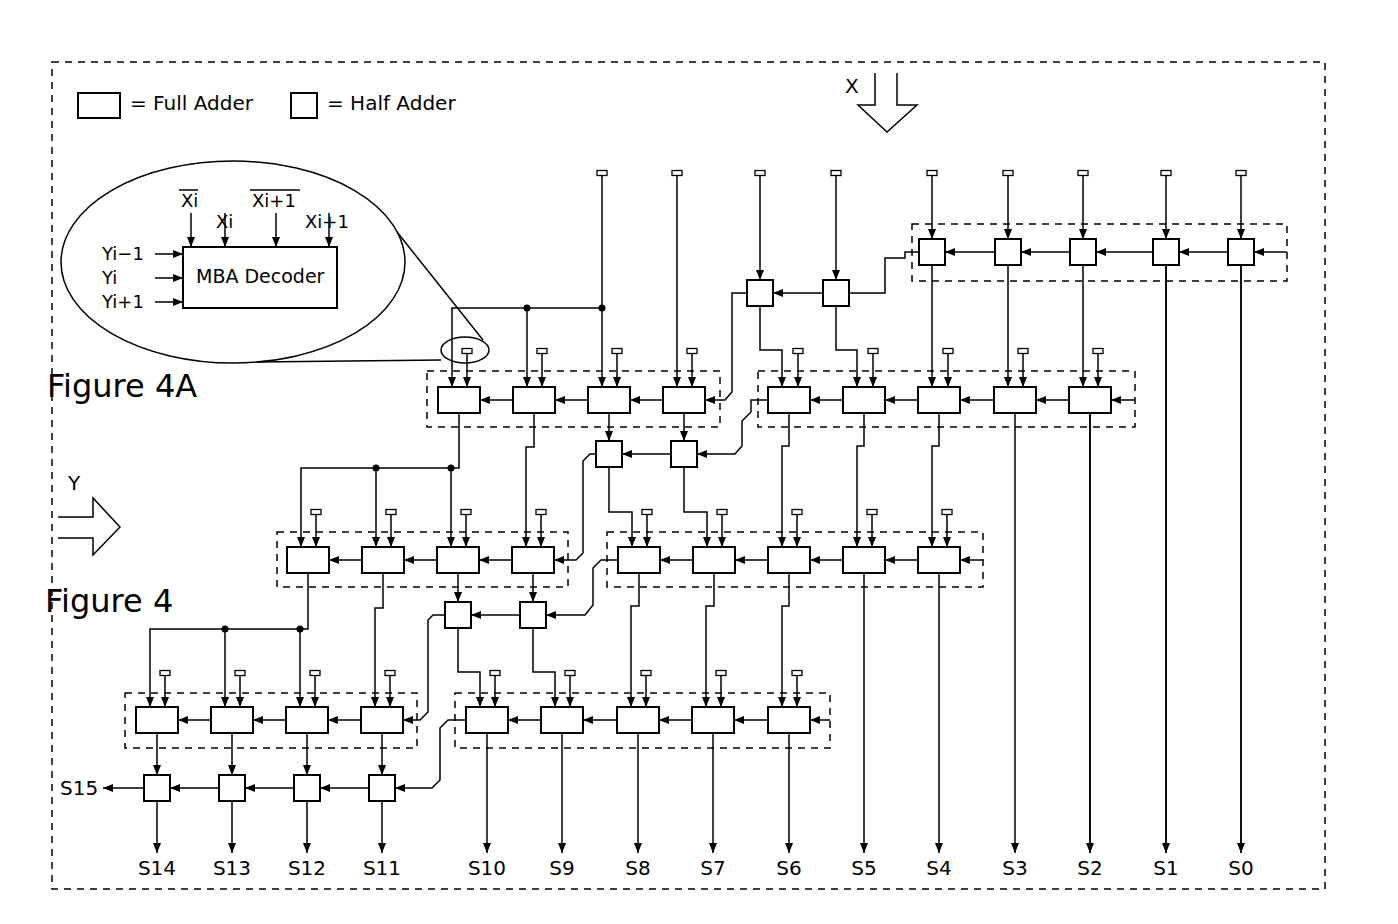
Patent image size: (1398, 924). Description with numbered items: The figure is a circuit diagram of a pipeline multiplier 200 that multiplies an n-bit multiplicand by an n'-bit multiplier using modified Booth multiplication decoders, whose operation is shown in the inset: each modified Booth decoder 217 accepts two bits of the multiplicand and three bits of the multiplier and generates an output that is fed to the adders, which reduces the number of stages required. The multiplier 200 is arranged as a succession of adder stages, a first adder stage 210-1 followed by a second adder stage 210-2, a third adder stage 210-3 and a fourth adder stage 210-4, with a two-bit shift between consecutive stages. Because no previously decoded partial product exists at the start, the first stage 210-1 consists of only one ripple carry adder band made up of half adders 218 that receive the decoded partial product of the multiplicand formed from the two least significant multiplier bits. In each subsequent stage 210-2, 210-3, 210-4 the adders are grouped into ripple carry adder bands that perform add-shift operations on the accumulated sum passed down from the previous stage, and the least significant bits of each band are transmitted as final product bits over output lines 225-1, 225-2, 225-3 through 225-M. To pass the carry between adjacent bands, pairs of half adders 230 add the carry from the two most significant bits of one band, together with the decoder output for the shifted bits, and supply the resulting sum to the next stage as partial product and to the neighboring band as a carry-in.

The pipeline multiplier 200 is at (1332, 52).
The first adder stage 210-1 is at (1151, 252).
The second adder stage 210-2 is at (909, 399).
The third adder stage 210-3 is at (834, 559).
The fourth adder stage 210-4 is at (758, 720).
The modified Booth multiplication decoder 217 is at (934, 169).
The half adder 218 is at (941, 266).
The half adder 230 is at (766, 280).
The output line 225-1 is at (1243, 807).
The output line 225-2 is at (1167, 824).
The output line 225-3 is at (1091, 808).
The output line 225-M is at (155, 820).